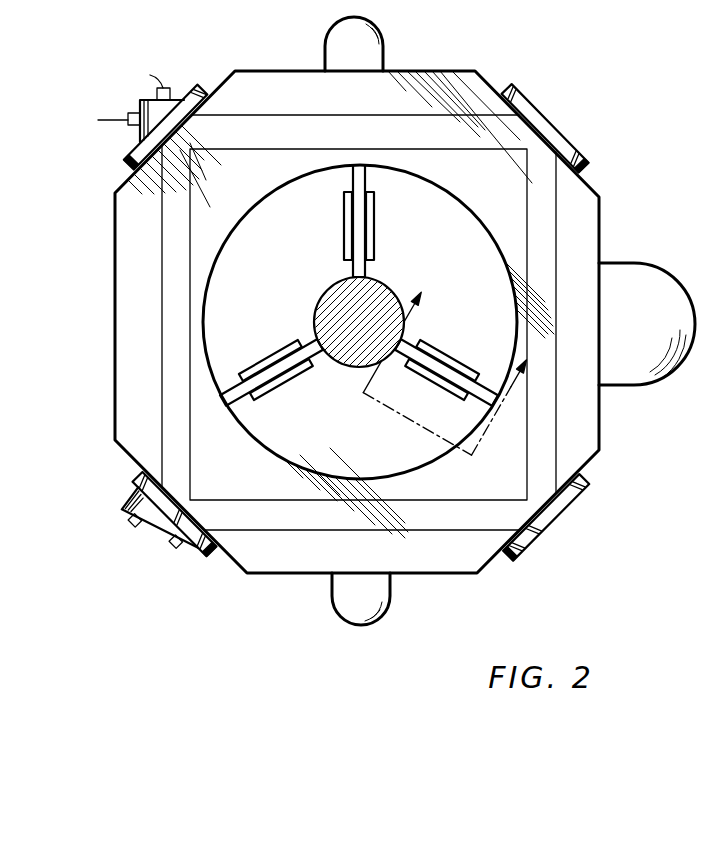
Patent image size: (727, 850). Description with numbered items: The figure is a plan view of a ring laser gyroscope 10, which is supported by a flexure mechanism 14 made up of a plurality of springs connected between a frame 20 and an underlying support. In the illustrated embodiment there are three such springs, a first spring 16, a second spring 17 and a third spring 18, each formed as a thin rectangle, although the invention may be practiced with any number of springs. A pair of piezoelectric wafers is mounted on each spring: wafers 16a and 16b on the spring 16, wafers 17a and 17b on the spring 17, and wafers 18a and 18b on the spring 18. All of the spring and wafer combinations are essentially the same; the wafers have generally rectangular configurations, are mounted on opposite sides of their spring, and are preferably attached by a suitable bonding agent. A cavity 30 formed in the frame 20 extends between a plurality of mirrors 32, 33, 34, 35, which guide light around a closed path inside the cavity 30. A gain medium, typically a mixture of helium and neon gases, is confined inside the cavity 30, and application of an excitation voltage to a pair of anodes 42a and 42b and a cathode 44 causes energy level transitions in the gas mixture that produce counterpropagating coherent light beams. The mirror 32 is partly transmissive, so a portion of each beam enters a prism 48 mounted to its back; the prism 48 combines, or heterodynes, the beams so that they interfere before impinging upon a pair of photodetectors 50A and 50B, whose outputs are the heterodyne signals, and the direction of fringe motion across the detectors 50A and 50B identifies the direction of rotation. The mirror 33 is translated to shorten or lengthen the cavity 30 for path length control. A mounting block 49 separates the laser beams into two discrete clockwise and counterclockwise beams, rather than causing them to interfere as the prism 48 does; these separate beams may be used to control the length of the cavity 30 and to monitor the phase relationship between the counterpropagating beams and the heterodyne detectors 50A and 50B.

The ring laser gyroscope 10 is at (104, 202).
The flexure mechanism 14 is at (180, 308).
The spring 16 is at (366, 268).
The piezoelectric wafer 16a is at (345, 225).
The piezoelectric wafer 16b is at (373, 212).
The spring 17 is at (408, 336).
The piezoelectric wafer 17a is at (462, 364).
The piezoelectric wafer 17b is at (434, 380).
The spring 18 is at (318, 340).
The piezoelectric wafer 18a is at (290, 385).
The piezoelectric wafer 18b is at (270, 355).
The frame 20 is at (129, 240).
The cavity 30 is at (162, 405).
The mirror 32 is at (138, 471).
The mirror 33 is at (203, 86).
The mirror 34 is at (532, 106).
The mirror 35 is at (574, 506).
The anode 42a is at (385, 48).
The anode 42b is at (333, 603).
The cathode 44 is at (652, 271).
The prism 48 is at (125, 500).
The mounting block 49 is at (140, 102).
The photodetector 50A is at (132, 526).
The photodetector 50B is at (170, 550).